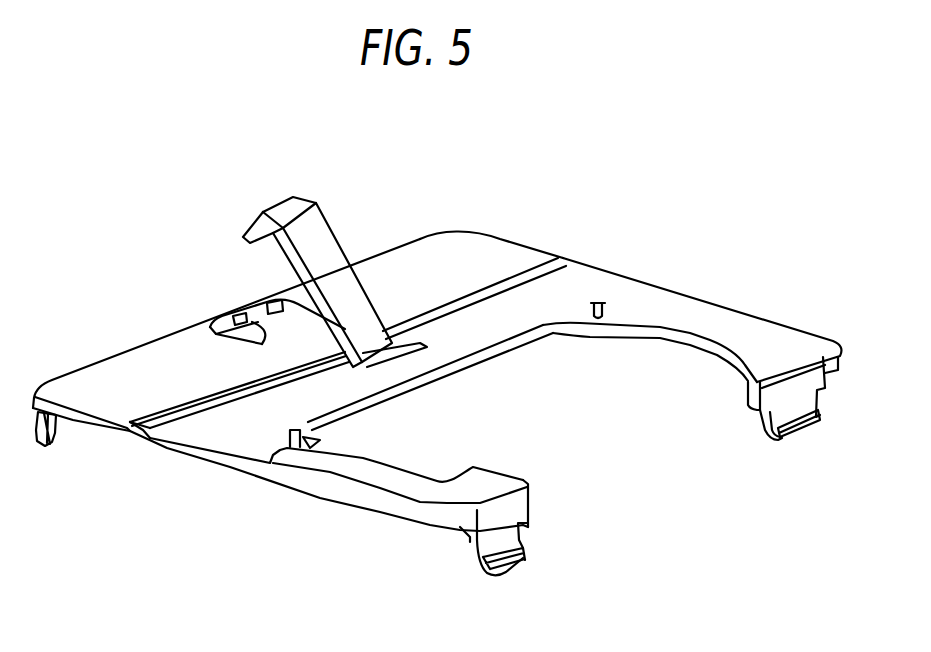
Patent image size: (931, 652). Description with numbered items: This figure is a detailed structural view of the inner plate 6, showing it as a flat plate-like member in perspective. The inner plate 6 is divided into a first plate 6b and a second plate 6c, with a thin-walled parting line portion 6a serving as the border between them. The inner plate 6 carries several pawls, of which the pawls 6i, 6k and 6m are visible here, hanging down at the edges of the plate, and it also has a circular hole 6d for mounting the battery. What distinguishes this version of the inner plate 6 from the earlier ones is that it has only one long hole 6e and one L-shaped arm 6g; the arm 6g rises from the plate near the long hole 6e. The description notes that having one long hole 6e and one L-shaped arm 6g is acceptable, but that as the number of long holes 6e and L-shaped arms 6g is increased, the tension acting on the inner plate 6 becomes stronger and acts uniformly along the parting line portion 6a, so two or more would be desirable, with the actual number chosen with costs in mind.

The inner plate 6 is at (643, 213).
The parting line portion 6a is at (530, 272).
The first plate 6b is at (705, 300).
The second plate 6c is at (452, 243).
The circular hole 6d is at (700, 345).
The long hole 6e is at (233, 317).
The L-shaped arm 6g is at (318, 238).
The pawl 6i is at (68, 434).
The pawl 6k is at (476, 560).
The pawl 6m is at (781, 442).